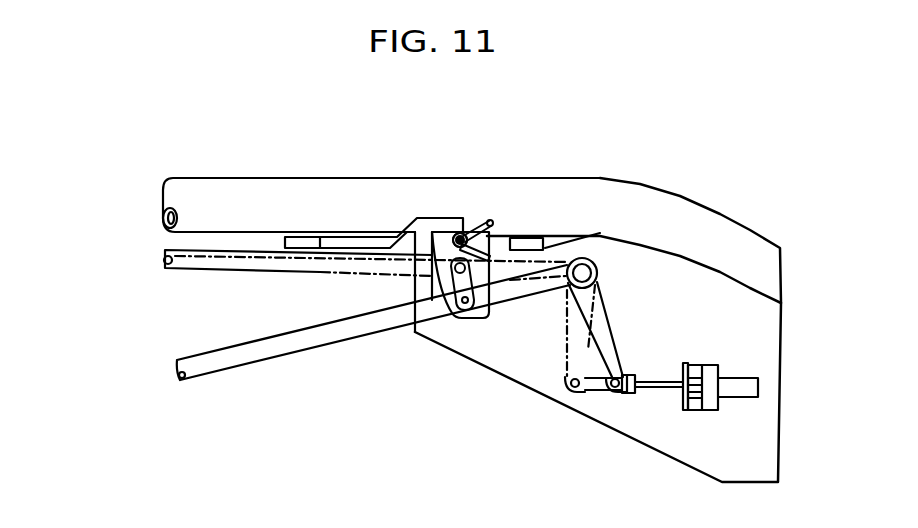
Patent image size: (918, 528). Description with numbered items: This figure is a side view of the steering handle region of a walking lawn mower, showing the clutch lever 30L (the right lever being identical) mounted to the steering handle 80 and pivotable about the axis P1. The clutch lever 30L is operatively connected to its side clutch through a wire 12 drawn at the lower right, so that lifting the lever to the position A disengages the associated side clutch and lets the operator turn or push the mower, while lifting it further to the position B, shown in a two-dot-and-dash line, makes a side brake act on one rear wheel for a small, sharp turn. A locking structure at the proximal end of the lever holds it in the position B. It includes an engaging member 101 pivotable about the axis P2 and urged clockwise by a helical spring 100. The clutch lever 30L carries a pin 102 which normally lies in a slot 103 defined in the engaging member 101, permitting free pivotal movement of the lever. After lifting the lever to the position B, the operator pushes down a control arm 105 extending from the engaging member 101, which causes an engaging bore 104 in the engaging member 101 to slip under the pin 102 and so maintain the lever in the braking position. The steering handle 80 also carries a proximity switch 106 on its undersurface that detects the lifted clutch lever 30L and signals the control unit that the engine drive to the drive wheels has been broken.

The steering handle 80 is at (239, 180).
The control arm 105 is at (313, 237).
The position B is at (157, 256).
The position A is at (175, 300).
The engaging bore 104 is at (443, 265).
The pin 102 is at (470, 323).
The slot 103 is at (490, 290).
The helical spring 100 is at (492, 228).
The axis P2 is at (458, 233).
The engaging member 101 is at (503, 235).
The proximity switch 106 is at (545, 248).
The axis P1 is at (592, 273).
The wire 12 is at (737, 400).
The clutch lever 30L is at (256, 356).